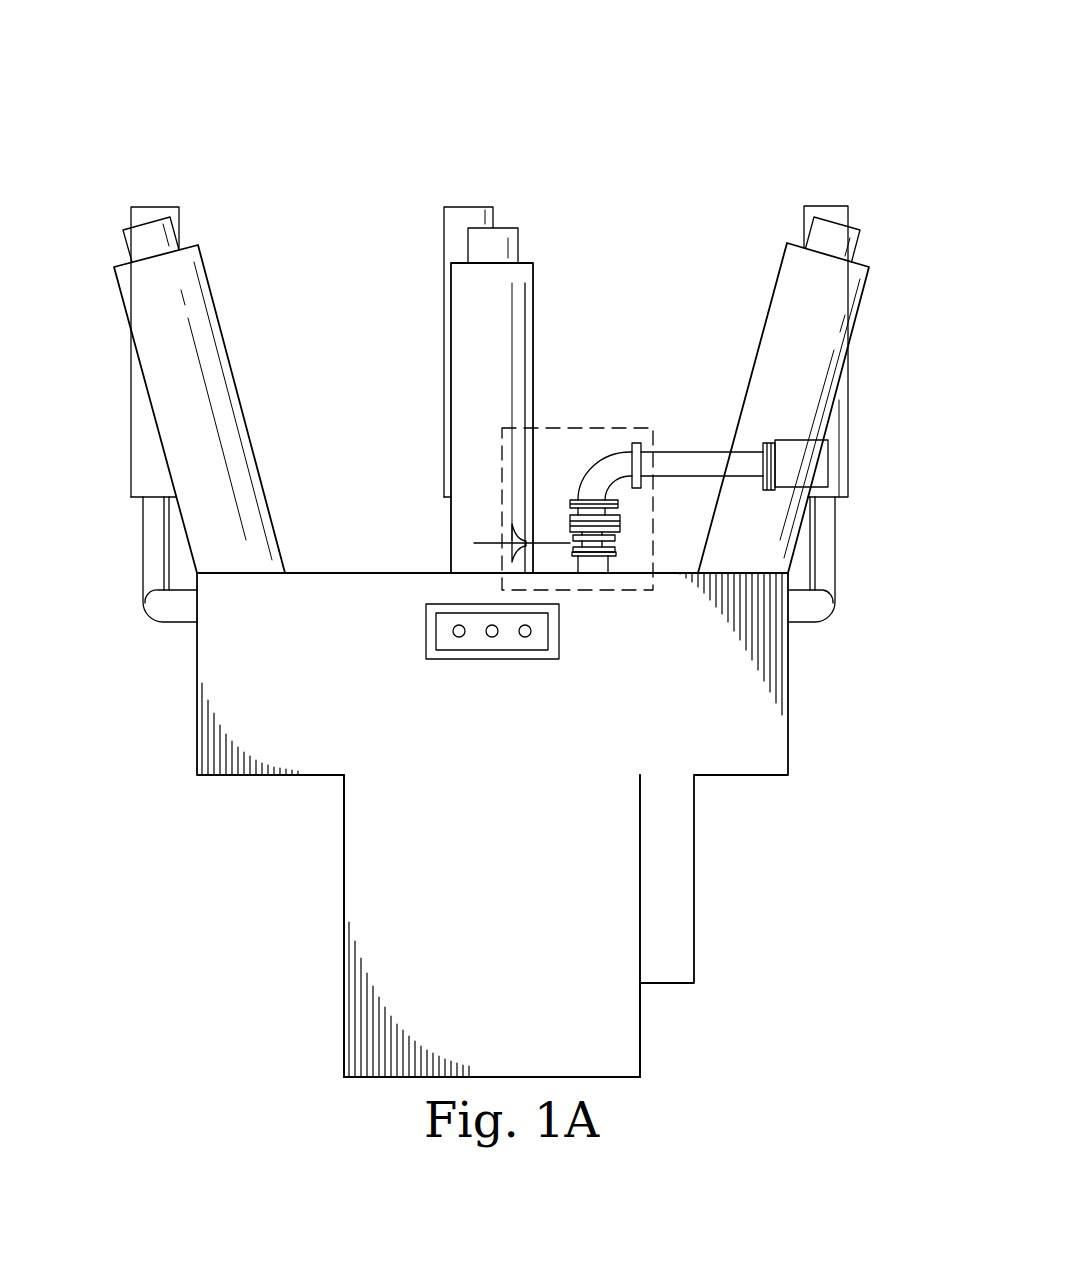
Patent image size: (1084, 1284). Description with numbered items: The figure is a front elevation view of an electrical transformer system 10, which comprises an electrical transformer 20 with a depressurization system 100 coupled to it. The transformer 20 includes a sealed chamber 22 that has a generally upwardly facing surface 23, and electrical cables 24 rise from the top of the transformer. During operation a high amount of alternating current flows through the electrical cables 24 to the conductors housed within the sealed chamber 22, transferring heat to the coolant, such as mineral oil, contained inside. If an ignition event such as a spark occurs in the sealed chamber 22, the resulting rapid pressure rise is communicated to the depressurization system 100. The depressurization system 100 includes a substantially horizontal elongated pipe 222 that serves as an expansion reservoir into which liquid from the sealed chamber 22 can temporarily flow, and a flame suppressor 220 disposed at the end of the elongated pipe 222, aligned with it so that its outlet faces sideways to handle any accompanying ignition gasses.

The electrical transformer system 10 is at (276, 80).
The electrical transformer 20 is at (286, 924).
The sealed chamber 22 is at (200, 686).
The upwardly facing surface 23 is at (370, 572).
The electrical cables 24 is at (122, 301).
The depressurization system 100 is at (712, 459).
The flame suppressor 220 is at (831, 465).
The elongated pipe 222 is at (690, 465).